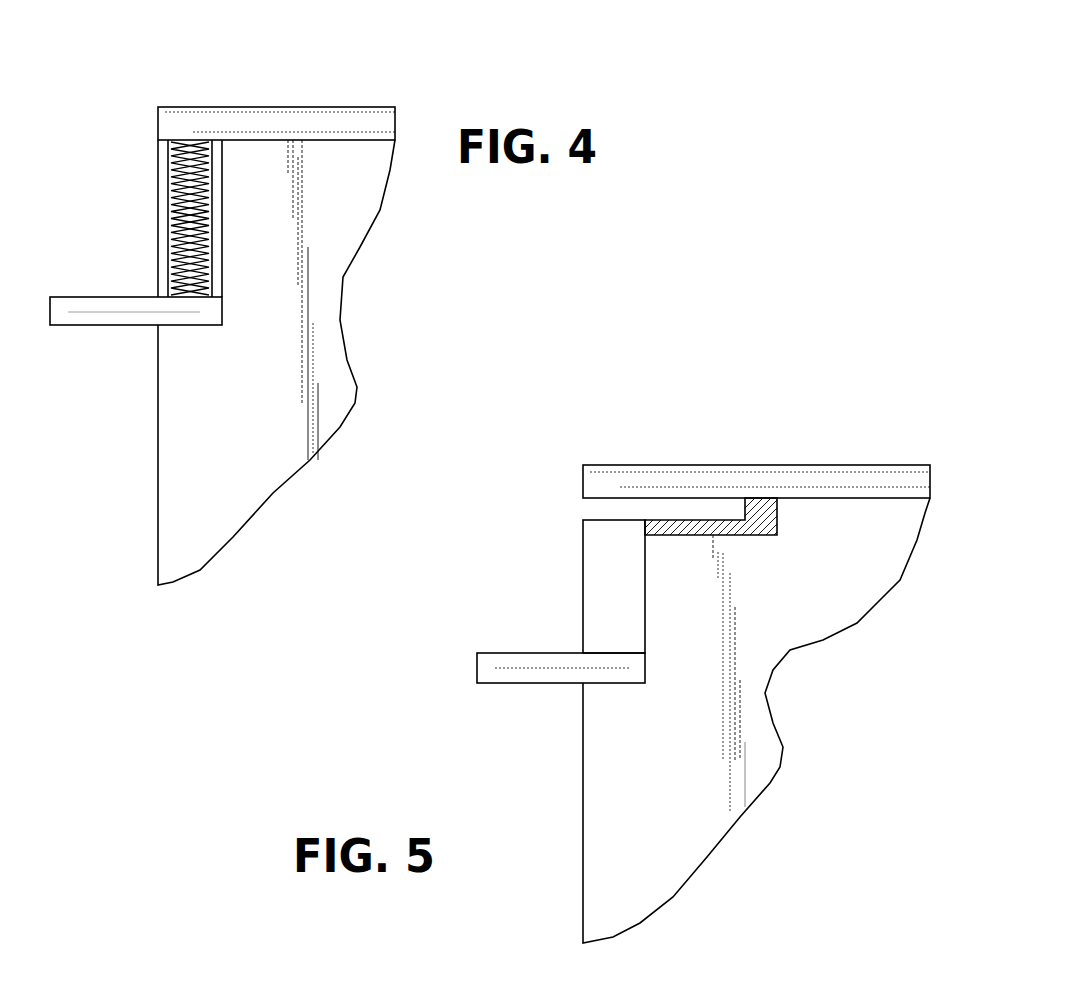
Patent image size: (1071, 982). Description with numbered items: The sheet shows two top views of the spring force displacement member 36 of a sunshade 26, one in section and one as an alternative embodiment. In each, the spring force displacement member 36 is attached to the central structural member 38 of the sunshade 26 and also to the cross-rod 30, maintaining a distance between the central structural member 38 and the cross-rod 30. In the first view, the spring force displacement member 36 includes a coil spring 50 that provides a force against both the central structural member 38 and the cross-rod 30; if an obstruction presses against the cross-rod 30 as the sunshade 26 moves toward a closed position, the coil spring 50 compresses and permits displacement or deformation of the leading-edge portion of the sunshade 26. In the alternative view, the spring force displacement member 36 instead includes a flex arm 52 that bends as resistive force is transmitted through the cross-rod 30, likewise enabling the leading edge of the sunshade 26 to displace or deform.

In FIG. 4, the sunshade 26 is at (237, 425).
In FIG. 5, the sunshade 26 is at (662, 782).
In FIG. 4, the cross-rod 30 is at (310, 118).
In FIG. 5, the cross-rod 30 is at (737, 477).
In FIG. 4, the spring force displacement member 36 is at (157, 187).
In FIG. 5, the spring force displacement member 36 is at (583, 547).
In FIG. 4, the central structural member 38 is at (93, 312).
In FIG. 5, the central structural member 38 is at (518, 668).
In FIG. 4, the coil spring 50 is at (172, 227).
In FIG. 5, the flex arm 52 is at (687, 523).